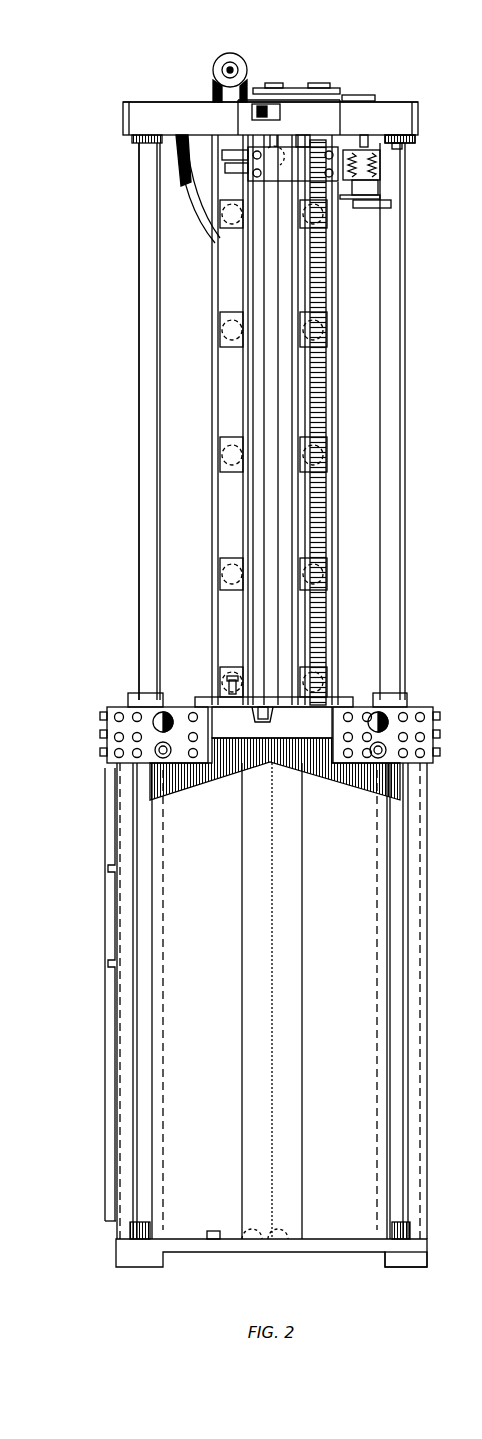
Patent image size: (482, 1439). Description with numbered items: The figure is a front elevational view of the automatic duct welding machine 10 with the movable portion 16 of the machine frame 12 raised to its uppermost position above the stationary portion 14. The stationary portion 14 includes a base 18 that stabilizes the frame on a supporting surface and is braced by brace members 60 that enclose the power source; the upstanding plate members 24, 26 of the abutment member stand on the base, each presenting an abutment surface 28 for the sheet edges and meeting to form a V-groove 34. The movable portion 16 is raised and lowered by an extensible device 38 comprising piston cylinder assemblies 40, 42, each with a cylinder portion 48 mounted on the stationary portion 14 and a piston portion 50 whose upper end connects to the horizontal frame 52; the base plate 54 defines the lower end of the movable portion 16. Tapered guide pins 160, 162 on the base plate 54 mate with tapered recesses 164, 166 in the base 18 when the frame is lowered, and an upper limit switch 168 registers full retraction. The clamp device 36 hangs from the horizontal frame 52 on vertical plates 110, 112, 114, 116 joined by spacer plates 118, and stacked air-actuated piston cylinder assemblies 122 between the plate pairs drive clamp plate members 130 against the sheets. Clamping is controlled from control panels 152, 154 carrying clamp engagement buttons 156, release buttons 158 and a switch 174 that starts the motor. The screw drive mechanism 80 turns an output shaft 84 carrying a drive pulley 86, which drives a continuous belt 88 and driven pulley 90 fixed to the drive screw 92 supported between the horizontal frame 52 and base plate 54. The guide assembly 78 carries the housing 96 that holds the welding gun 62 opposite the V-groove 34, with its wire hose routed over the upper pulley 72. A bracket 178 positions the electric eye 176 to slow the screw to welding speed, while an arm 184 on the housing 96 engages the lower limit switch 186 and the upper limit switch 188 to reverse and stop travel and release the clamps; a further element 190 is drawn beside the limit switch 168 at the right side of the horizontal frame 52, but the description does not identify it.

The automatic duct welding machine 10 is at (183, 58).
The machine frame 12 is at (93, 1259).
The stationary portion 14 is at (80, 814).
The movable portion 16 is at (430, 138).
The base 18 is at (395, 1262).
The upstanding plate member 24 is at (170, 880).
The upstanding plate member 26 is at (375, 875).
The abutment surface 28 is at (186, 974).
The V-groove 34 is at (275, 965).
The clamp device 36 is at (203, 340).
The extensible device 38 is at (120, 512).
The piston cylinder assembly 40 is at (135, 695).
The piston cylinder assembly 42 is at (400, 695).
The cylinder portion 48 is at (120, 778).
The piston portion 50 is at (139, 452).
The horizontal frame 52 is at (123, 120).
The base plate 54 is at (215, 703).
The brace members 60 is at (134, 1033).
The welding gun 62 is at (283, 147).
The upper pulley 72 is at (225, 60).
The guide assembly 78 is at (336, 208).
The screw drive mechanism 80 is at (314, 34).
The output shaft 84 is at (272, 83).
The drive pulley 86 is at (291, 88).
The continuous belt 88 is at (306, 86).
The driven pulley 90 is at (342, 95).
The drive screw 92 is at (330, 250).
The housing 96 is at (301, 168).
The vertically extending plate 110 is at (213, 510).
The vertically extending plate 112 is at (243, 490).
The vertically extending plate 114 is at (333, 510).
The vertically extending plate 116 is at (305, 490).
The spacer plates 118 is at (240, 230).
The piston cylinder assemblies 122 is at (230, 234).
The plate member 130 is at (253, 365).
The control panel 152 is at (180, 753).
The control panel 154 is at (360, 753).
The clamp engagement button 156 is at (150, 715).
The release button 158 is at (171, 754).
The guide pin 160 is at (254, 712).
The guide pin 162 is at (275, 712).
The tapered recess 164 is at (250, 1245).
The tapered recess 166 is at (282, 1250).
The upper limit switch 168 is at (398, 147).
The switch 174 is at (107, 735).
The electric eye 176 is at (390, 205).
The bracket 178 is at (378, 187).
The arm 184 is at (228, 156).
The lower limit switch 186 is at (229, 682).
The upper limit switch 188 is at (232, 170).
The spring unit 190 is at (380, 163).